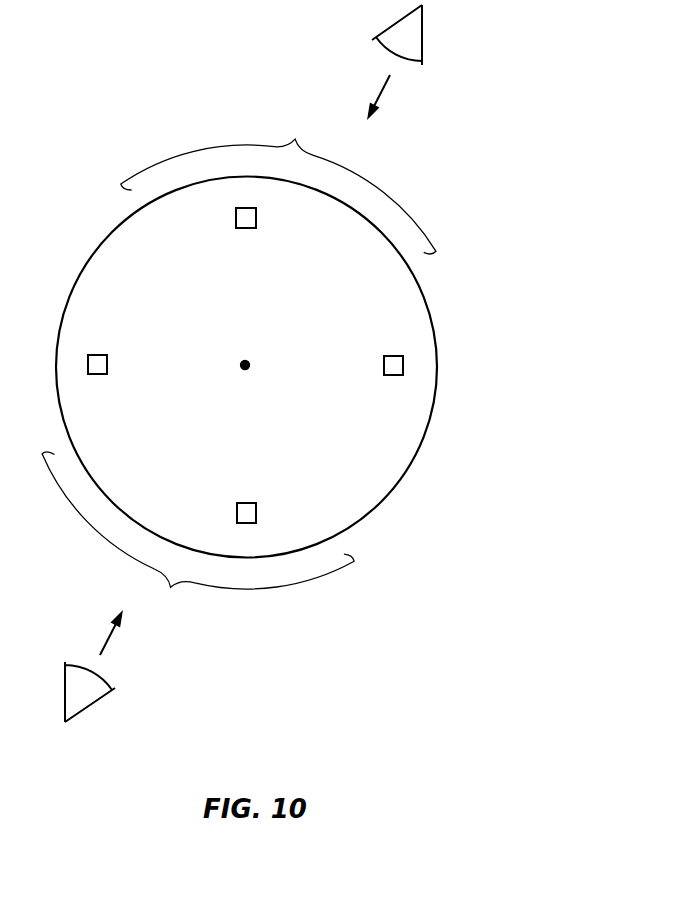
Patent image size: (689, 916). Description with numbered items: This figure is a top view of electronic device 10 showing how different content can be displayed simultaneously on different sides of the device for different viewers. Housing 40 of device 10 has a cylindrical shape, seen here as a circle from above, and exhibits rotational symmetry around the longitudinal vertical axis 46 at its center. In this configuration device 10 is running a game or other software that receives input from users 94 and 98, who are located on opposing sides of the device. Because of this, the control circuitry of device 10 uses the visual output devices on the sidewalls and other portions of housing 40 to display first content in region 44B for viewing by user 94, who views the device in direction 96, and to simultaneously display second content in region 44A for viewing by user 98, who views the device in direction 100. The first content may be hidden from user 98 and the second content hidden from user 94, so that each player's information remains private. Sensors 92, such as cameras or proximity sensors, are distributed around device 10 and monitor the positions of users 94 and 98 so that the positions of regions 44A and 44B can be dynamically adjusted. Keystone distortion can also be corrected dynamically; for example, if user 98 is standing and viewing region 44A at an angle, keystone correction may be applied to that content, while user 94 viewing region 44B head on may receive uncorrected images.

The electronic device 10 is at (474, 406).
The housing 40 is at (436, 333).
The region 44A is at (278, 185).
The region 44B is at (198, 532).
The longitudinal axis 46 is at (250, 364).
The sensors 92 is at (246, 228).
The user 94 is at (95, 702).
The direction 96 is at (110, 640).
The user 98 is at (423, 32).
The direction 100 is at (385, 92).